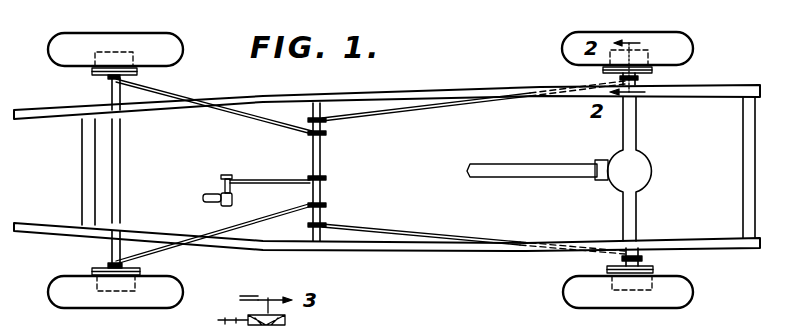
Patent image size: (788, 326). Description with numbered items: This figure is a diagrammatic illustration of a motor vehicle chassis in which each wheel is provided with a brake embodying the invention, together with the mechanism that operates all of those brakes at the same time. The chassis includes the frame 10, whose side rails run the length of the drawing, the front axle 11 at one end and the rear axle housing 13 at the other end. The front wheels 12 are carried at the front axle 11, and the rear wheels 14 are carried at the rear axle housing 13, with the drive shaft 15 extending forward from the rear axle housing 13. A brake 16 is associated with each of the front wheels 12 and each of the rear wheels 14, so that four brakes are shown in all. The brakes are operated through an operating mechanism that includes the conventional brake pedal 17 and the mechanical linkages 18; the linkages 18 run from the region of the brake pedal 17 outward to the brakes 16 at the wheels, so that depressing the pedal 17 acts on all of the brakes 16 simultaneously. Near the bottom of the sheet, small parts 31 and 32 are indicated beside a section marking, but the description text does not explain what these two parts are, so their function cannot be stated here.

The frame 10 is at (162, 104).
The front axle 11 is at (120, 168).
The front wheels 12 is at (165, 45).
The rear axle housing 13 is at (634, 126).
The rear wheels 14 is at (688, 45).
The drive shaft 15 is at (498, 168).
The brake 16 is at (138, 72).
The brake pedal 17 is at (206, 196).
The mechanical linkages 18 is at (300, 134).
The spring block 31 is at (285, 322).
The bracket 32 is at (218, 320).